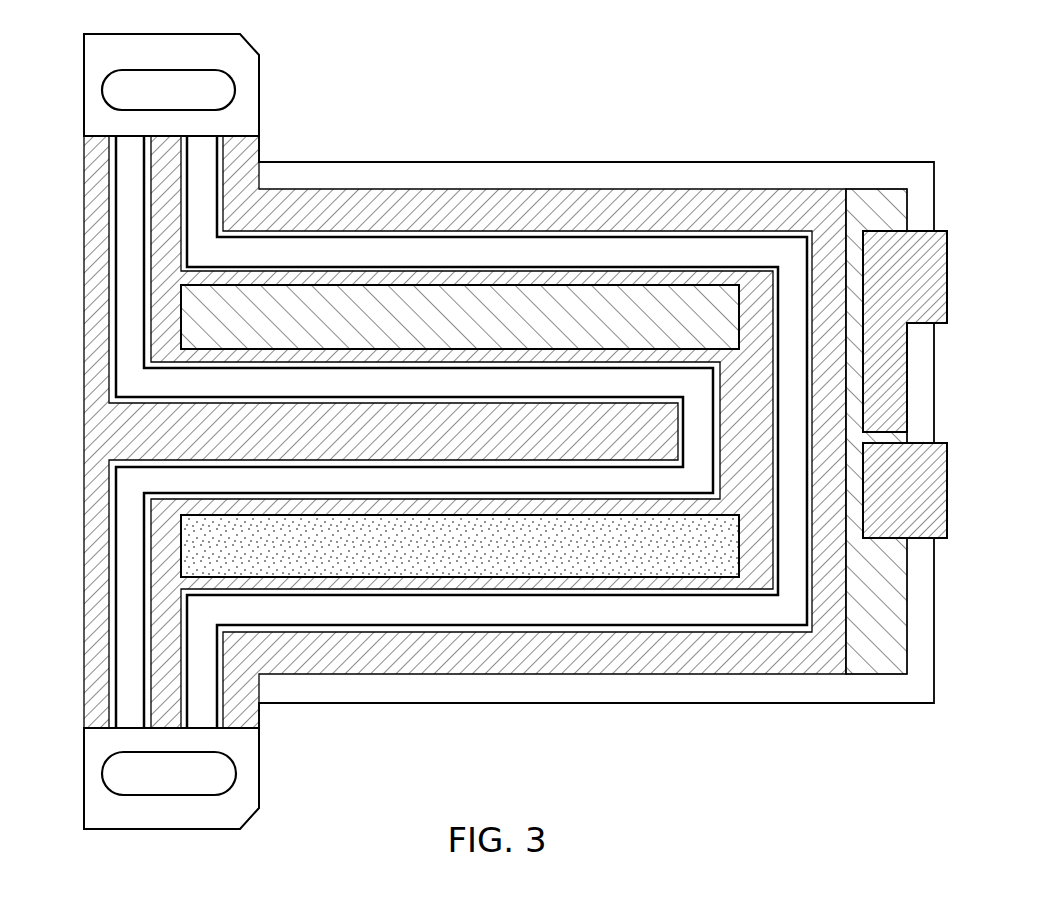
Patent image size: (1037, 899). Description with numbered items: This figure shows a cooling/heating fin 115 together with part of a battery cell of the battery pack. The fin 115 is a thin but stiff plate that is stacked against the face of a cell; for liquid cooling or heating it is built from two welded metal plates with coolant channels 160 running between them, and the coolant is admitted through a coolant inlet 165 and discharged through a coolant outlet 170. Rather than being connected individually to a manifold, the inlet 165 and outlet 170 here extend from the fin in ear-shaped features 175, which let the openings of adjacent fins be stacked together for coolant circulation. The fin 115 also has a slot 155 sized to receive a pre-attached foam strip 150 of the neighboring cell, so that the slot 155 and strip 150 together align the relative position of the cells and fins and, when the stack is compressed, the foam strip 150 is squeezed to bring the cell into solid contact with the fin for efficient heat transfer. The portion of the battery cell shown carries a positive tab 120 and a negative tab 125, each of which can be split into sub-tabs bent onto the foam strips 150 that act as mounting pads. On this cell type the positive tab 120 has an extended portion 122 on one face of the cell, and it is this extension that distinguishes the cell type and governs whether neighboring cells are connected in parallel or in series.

The cooling/heating fin 115 is at (337, 213).
The positive tab 120 is at (946, 272).
The extended portion 122 is at (898, 374).
The negative tab 125 is at (946, 491).
The foam strip 150 is at (593, 297).
The slot 155 is at (531, 568).
The coolant channel 160 is at (693, 255).
The coolant inlet 165 is at (108, 89).
The coolant outlet 170 is at (108, 772).
The ear-shaped feature 175 is at (259, 770).